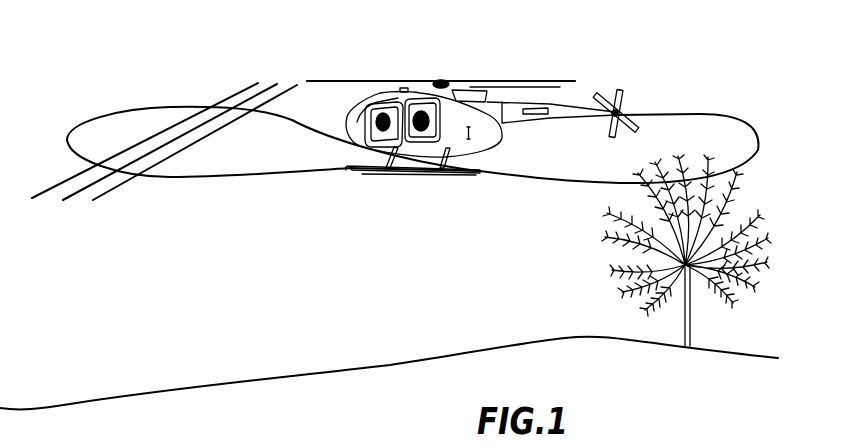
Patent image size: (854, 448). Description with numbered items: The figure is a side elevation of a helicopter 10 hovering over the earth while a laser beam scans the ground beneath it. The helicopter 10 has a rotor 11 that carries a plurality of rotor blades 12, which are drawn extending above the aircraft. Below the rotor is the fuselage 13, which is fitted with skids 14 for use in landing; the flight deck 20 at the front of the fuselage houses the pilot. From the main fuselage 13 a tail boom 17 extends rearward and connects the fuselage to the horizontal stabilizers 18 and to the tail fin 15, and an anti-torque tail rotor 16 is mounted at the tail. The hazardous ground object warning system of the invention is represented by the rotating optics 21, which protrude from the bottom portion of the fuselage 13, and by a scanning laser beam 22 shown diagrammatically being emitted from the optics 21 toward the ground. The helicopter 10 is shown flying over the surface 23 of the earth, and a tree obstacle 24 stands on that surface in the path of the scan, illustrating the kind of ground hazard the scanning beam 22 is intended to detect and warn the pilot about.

The helicopter 10 is at (540, 67).
The rotor 11 is at (443, 79).
The rotor blades 12 is at (388, 79).
The fuselage 13 is at (477, 133).
The skids 14 is at (353, 173).
The tail fin 15 is at (622, 100).
The anti-torque tail rotor 16 is at (700, 114).
The tail boom 17 is at (540, 117).
The horizontal stabilizers 18 is at (637, 117).
The flight deck 20 is at (367, 117).
The rotating optics 21 is at (395, 173).
The scanning laser beam 22 is at (163, 131).
The surface of the earth 23 is at (133, 395).
The tree obstacle 24 is at (690, 317).